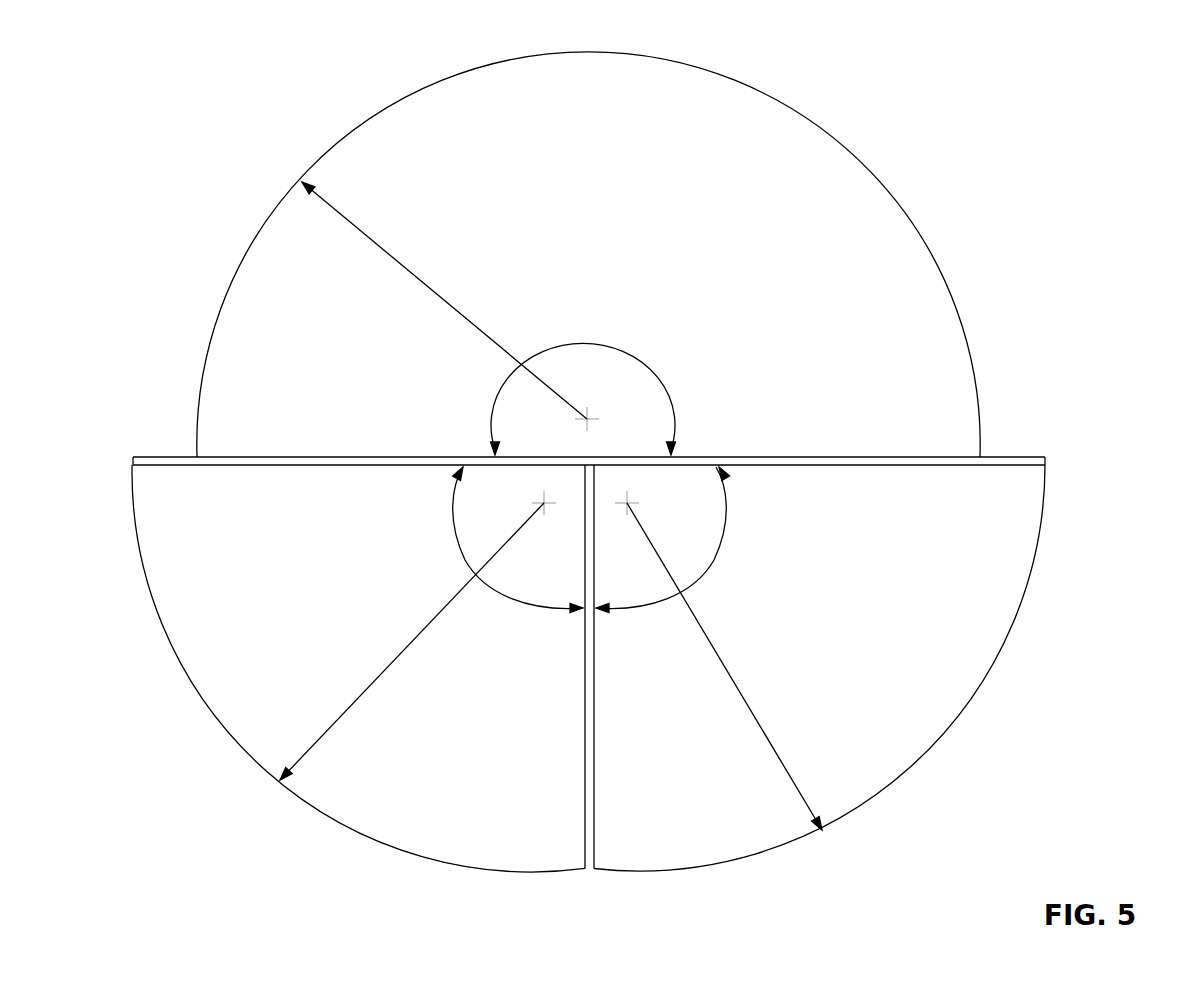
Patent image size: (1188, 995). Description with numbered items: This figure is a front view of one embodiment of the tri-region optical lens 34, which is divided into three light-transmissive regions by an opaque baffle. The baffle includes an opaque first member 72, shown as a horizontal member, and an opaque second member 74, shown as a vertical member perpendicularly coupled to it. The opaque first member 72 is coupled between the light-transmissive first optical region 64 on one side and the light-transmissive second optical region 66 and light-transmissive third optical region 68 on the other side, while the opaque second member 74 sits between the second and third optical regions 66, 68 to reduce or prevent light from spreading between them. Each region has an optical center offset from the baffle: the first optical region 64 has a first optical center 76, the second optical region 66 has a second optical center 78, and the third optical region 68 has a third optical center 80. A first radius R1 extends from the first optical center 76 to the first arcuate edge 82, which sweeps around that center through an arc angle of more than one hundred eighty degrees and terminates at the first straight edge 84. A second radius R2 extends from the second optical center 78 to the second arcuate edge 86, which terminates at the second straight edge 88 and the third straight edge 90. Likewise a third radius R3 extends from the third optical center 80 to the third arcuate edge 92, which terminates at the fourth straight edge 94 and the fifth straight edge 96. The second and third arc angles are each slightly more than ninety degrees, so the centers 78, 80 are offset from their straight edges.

The implant body 34 is at (653, 504).
The light-transmissive first optical region 64 is at (623, 254).
The light-transmissive second optical region 66 is at (819, 668).
The light-transmissive third optical region 68 is at (358, 701).
The opaque first member 72 is at (612, 456).
The opaque second member 74 is at (586, 715).
The first optical center 76 is at (592, 417).
The second optical center 78 is at (626, 508).
The third optical center 80 is at (546, 508).
The first arcuate edge 82 is at (940, 263).
The first straight edge 84 is at (310, 457).
The second arcuate edge 86 is at (970, 707).
The second straight edge 88 is at (905, 465).
The third straight edge 90 is at (595, 762).
The third arcuate edge 92 is at (340, 828).
The fourth straight edge 94 is at (584, 718).
The fifth straight edge 96 is at (338, 465).
The first radius R1 is at (405, 266).
The second radius R2 is at (745, 677).
The third radius R3 is at (400, 660).